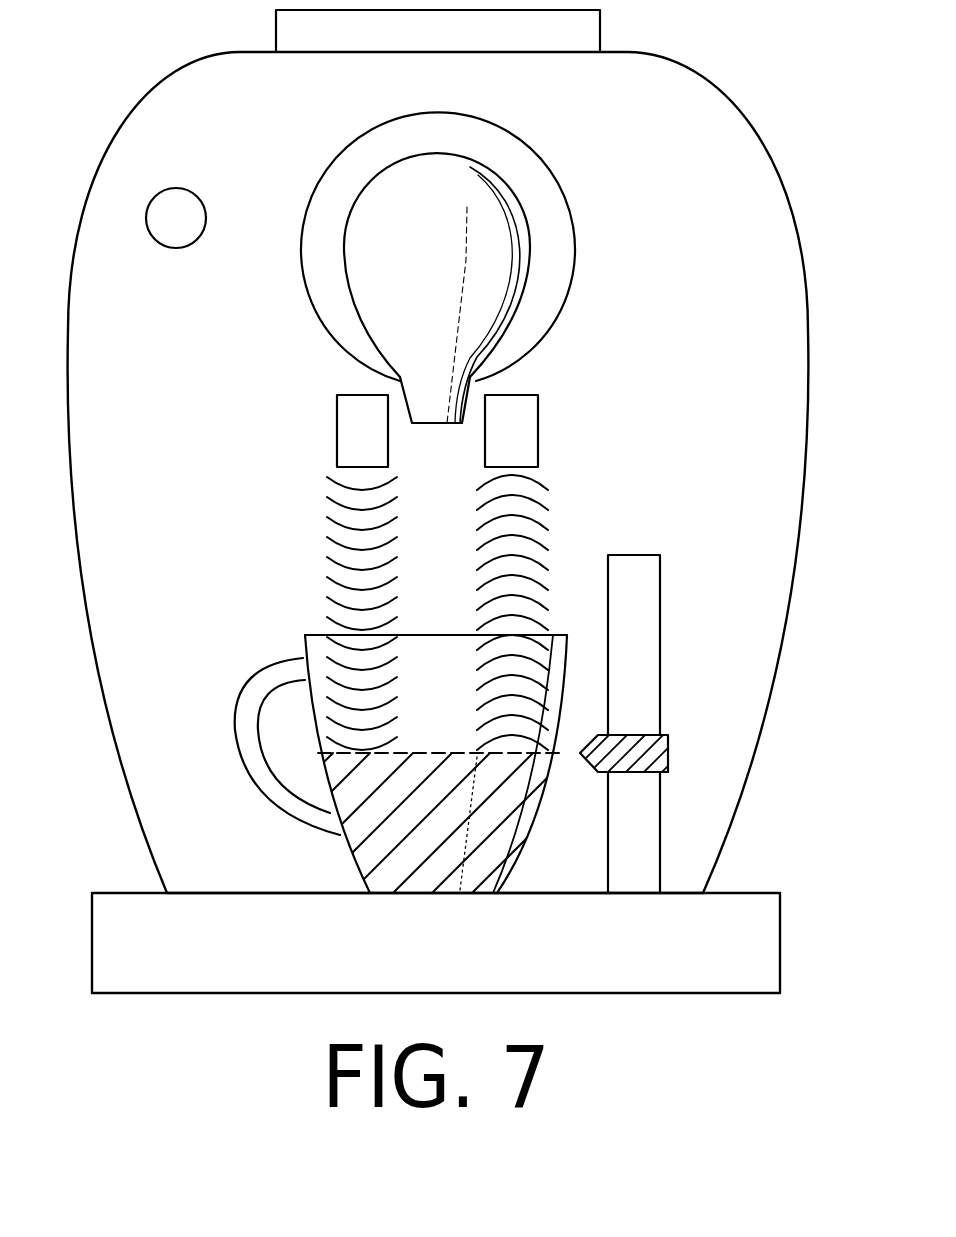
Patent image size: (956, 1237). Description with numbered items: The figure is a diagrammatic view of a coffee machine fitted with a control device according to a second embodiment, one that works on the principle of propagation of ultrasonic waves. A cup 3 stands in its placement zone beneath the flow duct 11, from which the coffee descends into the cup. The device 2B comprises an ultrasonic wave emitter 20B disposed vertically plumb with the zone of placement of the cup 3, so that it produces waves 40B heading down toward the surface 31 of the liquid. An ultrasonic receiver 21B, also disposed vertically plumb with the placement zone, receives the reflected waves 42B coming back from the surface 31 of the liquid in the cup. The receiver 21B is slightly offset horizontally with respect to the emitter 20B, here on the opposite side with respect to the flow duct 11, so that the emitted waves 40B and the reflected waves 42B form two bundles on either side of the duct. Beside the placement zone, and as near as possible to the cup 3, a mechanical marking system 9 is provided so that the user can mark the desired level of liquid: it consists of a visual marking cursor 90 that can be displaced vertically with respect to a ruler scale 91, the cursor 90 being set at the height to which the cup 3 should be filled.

The flow duct 11 is at (430, 370).
The device 2B is at (487, 572).
The ultrasonic wave emitter 20B is at (337, 433).
The ultrasonic receiver 21B is at (538, 432).
The waves 40B is at (327, 527).
The reflected waves 42B is at (548, 522).
The cup 3 is at (346, 742).
The surface of the liquid 31 is at (417, 753).
The mechanical marking system 9 is at (699, 724).
The ruler scale 91 is at (655, 588).
The visual marking cursor 90 is at (699, 749).